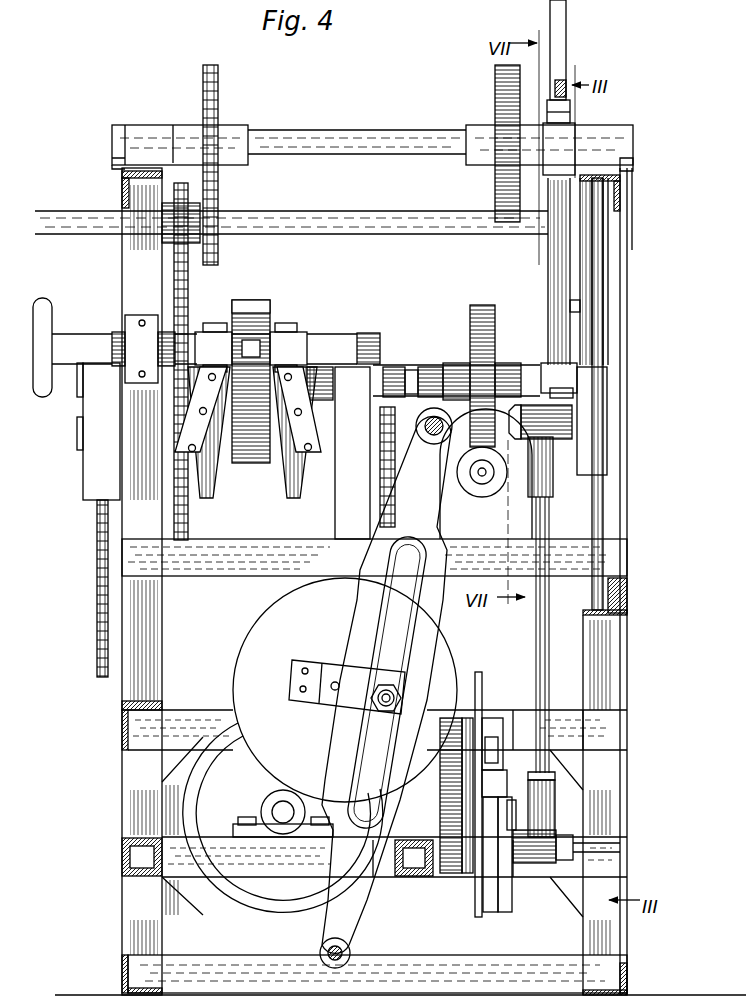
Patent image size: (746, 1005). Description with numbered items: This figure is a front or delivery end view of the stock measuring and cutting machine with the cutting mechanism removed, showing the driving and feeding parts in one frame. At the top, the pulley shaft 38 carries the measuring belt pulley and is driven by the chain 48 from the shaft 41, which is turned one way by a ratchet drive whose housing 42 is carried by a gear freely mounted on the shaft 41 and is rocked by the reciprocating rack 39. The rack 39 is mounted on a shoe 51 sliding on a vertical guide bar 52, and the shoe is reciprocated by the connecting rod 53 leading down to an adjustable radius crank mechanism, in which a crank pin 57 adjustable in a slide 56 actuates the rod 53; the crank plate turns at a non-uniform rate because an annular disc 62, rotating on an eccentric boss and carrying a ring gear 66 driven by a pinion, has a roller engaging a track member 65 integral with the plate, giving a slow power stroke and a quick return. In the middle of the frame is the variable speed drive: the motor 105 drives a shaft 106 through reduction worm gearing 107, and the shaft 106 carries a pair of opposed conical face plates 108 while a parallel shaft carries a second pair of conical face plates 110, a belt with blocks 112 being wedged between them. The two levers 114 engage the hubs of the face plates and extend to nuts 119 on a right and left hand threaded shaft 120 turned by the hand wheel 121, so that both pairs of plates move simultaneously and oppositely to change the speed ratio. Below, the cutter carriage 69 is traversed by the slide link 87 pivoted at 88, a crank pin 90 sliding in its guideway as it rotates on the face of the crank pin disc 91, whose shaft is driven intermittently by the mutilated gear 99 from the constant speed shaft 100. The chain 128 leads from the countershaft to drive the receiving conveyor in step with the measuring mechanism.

The shaft 41 is at (354, 148).
The housing 42 is at (512, 87).
The reciprocating rack 39 is at (561, 57).
The chain 48 is at (220, 192).
The pulley shaft 38 is at (346, 222).
The hand wheel 121 is at (42, 323).
The right and left hand threaded shaft 120 is at (183, 343).
The blocks 112 is at (249, 303).
The conical face plates 108 is at (274, 316).
The nuts 119 is at (291, 345).
The levers 114 is at (338, 352).
The conical face plates 110 is at (285, 484).
The shaft 106 is at (421, 349).
The reduction worm gearing 107 is at (489, 353).
The vertical guide bar 52 is at (603, 328).
The shoe 51 is at (592, 425).
The connecting rod 53 is at (526, 637).
The crank pin 57 is at (546, 878).
The motor 105 is at (486, 474).
The slide link 87 is at (436, 618).
The pivot 88 is at (351, 952).
The crank pin disc 91 is at (245, 658).
The crank pin 90 is at (380, 708).
The cutter carriage 69 is at (400, 652).
The annular disc 62 is at (483, 670).
The track member 65 is at (496, 730).
The slide 56 is at (507, 900).
The ring gear 66 is at (453, 873).
The mutilated gear 99 is at (233, 897).
The shaft 100 is at (285, 835).
The chain 128 is at (97, 617).